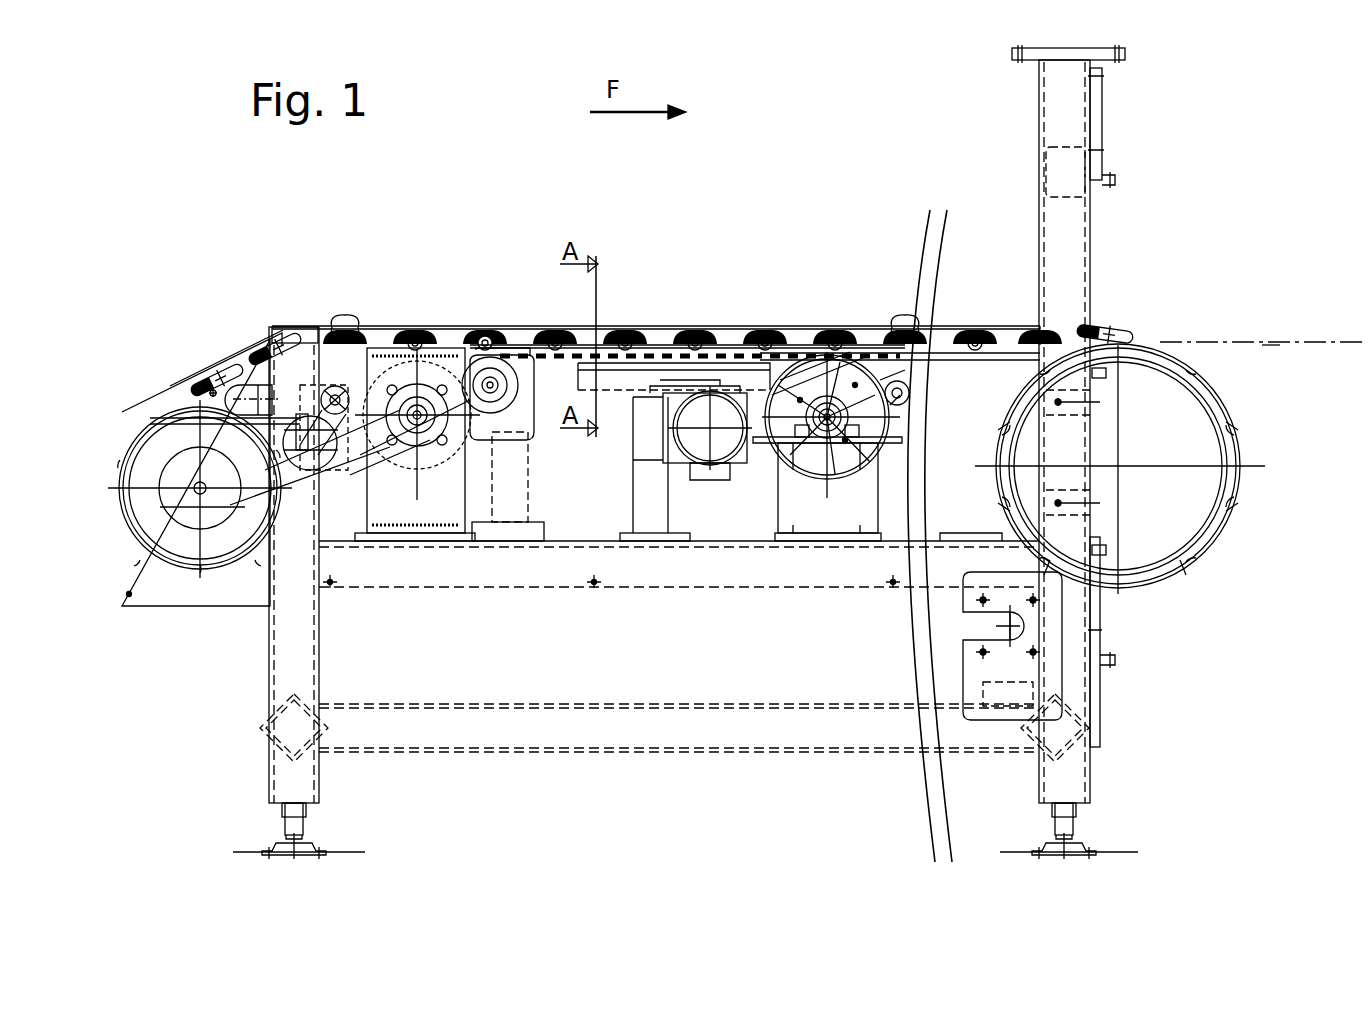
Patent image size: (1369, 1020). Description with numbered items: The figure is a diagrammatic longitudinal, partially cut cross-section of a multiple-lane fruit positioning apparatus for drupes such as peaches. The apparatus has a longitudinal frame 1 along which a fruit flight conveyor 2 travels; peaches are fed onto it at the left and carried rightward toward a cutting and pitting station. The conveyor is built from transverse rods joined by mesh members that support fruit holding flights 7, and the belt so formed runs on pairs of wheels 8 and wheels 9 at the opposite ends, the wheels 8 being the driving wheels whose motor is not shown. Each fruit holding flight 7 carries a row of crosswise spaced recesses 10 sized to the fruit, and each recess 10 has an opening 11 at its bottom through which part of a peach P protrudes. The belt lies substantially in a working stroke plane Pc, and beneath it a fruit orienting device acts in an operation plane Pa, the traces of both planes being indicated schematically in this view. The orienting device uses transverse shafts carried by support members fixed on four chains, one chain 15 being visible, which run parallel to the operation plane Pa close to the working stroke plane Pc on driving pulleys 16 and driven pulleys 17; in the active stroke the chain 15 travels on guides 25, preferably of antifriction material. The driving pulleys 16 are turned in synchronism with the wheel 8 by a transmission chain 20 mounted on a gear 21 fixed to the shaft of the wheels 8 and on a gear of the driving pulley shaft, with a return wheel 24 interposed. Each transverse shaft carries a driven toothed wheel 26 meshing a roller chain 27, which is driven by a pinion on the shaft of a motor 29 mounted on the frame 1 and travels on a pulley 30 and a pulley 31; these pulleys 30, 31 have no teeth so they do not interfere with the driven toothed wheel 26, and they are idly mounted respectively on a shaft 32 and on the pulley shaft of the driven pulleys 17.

The longitudinal frame 1 is at (258, 690).
The fruit flight conveyor 2 is at (207, 322).
The fruit holding flights 7 is at (460, 337).
The wheels 8 is at (146, 600).
The wheels 9 is at (1220, 535).
The recesses 10 is at (203, 368).
The opening 11 is at (290, 350).
The chain 15 is at (735, 365).
The driving pulleys 16 is at (388, 362).
The driven pulleys 17 is at (833, 457).
The transmission chain 20 is at (242, 514).
The gear 21 is at (146, 600).
The return wheel 24 is at (293, 395).
The guides 25 is at (665, 385).
The driven toothed wheel 26 is at (777, 350).
The roller chain 27 is at (802, 368).
The motor 29 is at (717, 440).
The pulley 30 is at (505, 360).
The pulley 31 is at (882, 377).
The shaft 32 is at (481, 338).
The peach P is at (344, 317).
The working stroke plane Pc is at (1252, 342).
The operation plane Pa is at (1272, 352).